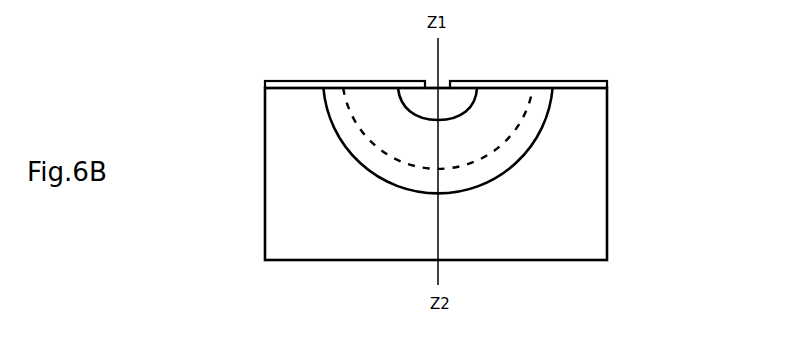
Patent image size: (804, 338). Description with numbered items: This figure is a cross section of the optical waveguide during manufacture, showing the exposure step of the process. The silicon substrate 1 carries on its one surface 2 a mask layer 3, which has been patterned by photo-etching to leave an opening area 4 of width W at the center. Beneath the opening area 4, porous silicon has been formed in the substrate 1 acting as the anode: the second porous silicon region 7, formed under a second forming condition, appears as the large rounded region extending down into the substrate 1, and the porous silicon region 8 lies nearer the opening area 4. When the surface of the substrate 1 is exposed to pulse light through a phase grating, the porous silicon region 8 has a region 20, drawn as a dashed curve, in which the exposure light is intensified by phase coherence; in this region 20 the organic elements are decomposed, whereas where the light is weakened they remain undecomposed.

The silicon substrate 1 is at (591, 197).
The one surface 2 is at (608, 87).
The mask layer 3 is at (583, 86).
The opening area 4 is at (443, 84).
The second porous silicon region 7 is at (336, 112).
The porous silicon region 8 is at (418, 95).
The region 20 is at (500, 110).